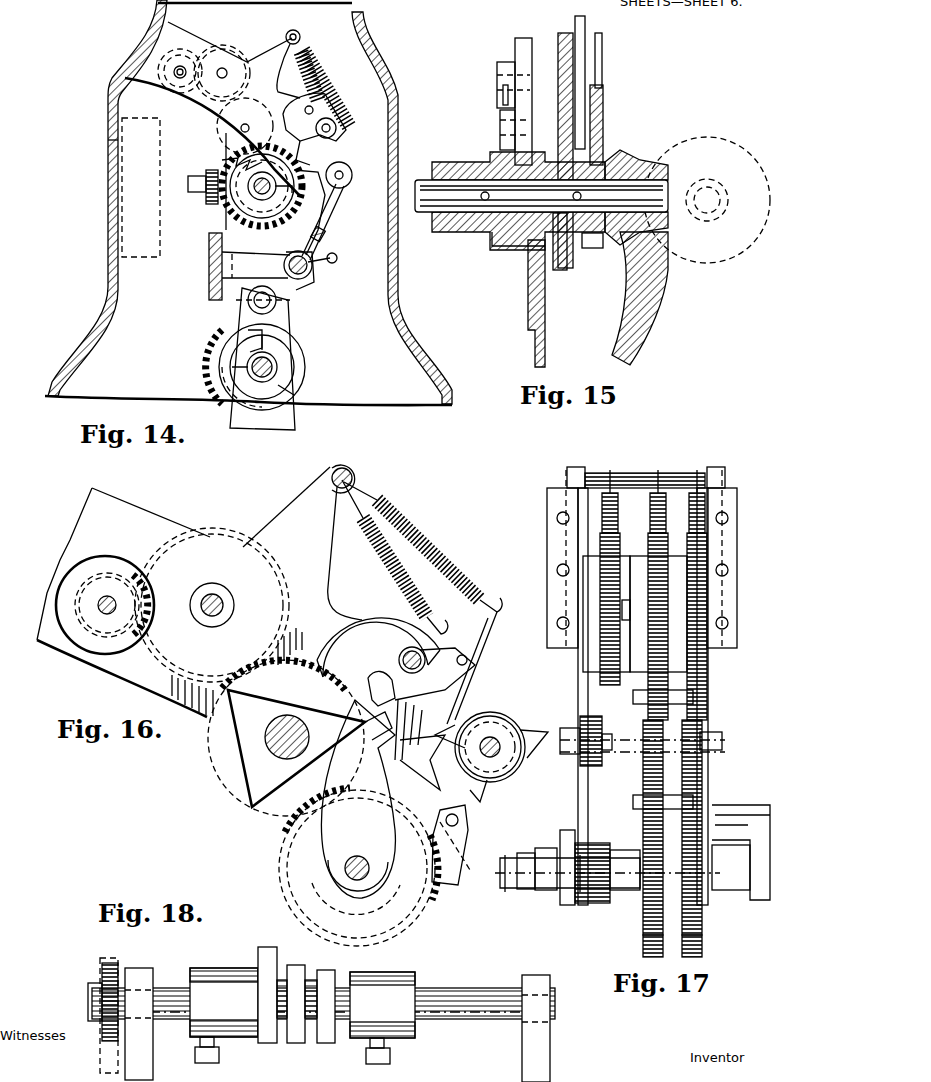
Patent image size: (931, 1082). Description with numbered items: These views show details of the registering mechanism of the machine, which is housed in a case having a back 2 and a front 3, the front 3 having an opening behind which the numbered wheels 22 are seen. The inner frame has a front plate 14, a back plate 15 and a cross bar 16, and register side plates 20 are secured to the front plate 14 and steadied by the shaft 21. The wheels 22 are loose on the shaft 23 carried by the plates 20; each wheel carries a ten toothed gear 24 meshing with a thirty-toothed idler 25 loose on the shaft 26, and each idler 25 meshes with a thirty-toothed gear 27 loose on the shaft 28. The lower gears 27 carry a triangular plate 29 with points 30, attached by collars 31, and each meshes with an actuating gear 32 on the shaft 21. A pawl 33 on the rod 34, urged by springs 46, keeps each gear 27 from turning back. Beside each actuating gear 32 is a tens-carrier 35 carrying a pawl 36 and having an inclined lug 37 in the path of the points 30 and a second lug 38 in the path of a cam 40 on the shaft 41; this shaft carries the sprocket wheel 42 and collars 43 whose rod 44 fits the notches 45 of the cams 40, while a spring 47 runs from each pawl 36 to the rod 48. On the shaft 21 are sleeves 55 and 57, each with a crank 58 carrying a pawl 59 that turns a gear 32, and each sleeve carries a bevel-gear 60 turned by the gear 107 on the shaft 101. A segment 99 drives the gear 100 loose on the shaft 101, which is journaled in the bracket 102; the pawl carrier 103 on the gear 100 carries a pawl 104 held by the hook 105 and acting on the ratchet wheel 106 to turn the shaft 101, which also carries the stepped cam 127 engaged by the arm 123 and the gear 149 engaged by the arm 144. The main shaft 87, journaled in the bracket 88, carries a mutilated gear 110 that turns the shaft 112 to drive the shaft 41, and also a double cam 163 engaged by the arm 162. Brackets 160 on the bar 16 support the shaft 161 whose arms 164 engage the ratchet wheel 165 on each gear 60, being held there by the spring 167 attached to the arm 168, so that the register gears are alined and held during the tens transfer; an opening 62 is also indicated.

In FIG. 14, the back 2 is at (392, 120).
In FIG. 14, the front 3 is at (110, 150).
In FIG. 14, the front plate 14 is at (125, 78).
In FIG. 14, the back plate 15 is at (378, 60).
In FIG. 14, the cross bar 16 is at (208, 268).
In FIG. 14, the side plates 20 is at (230, 47).
In FIG. 16, the side plates 20 is at (183, 592).
In FIG. 17, the side plates 20 is at (548, 549).
In FIG. 18, the side plates 20 is at (337, 1025).
In FIG. 14, the shaft 21 is at (217, 222).
In FIG. 16, the shaft 21 is at (360, 856).
In FIG. 17, the shaft 21 is at (502, 882).
In FIG. 14, the wheels 22 is at (172, 93).
In FIG. 16, the wheels 22 is at (96, 562).
In FIG. 17, the wheels 22 is at (640, 560).
In FIG. 14, the shaft 23 is at (181, 66).
In FIG. 16, the shaft 23 is at (103, 612).
In FIG. 16, the ten toothed gear 24 is at (130, 590).
In FIG. 17, the ten toothed gear 24 is at (580, 590).
In FIG. 16, the idler 25 is at (218, 622).
In FIG. 17, the idler 25 is at (705, 540).
In FIG. 14, the shaft 26 is at (223, 68).
In FIG. 16, the shaft 26 is at (224, 604).
In FIG. 16, the gear 27 is at (286, 738).
In FIG. 17, the gear 27 is at (702, 768).
In FIG. 14, the shaft 28 is at (245, 126).
In FIG. 16, the shaft 28 is at (272, 744).
In FIG. 17, the shaft 28 is at (718, 742).
In FIG. 16, the triangular plate 29 is at (296, 748).
In FIG. 17, the triangular plate 29 is at (636, 780).
In FIG. 16, the points 30 is at (358, 722).
In FIG. 17, the points 30 is at (635, 702).
In FIG. 16, the collars 31 is at (282, 758).
In FIG. 16, the actuating gear 32 is at (358, 867).
In FIG. 17, the actuating gear 32 is at (685, 957).
In FIG. 16, the pawl 33 is at (378, 647).
In FIG. 16, the rod 34 is at (435, 666).
In FIG. 16, the tens-carrier 35 is at (371, 799).
In FIG. 14, the pawl 36 is at (321, 129).
In FIG. 16, the pawl 36 is at (362, 672).
In FIG. 16, the inclined lug 37 is at (378, 726).
In FIG. 16, the second lug 38 is at (420, 760).
In FIG. 16, the cam 40 is at (500, 728).
In FIG. 18, the cam 40 is at (268, 1043).
In FIG. 14, the shaft 41 is at (344, 188).
In FIG. 16, the shaft 41 is at (488, 740).
In FIG. 18, the shaft 41 is at (170, 998).
In FIG. 18, the sprocket wheel 42 is at (108, 963).
In FIG. 18, the collars 43 is at (302, 1016).
In FIG. 18, the rod 44 is at (312, 1045).
In FIG. 16, the notches 45 is at (522, 768).
In FIG. 14, the springs 46 is at (297, 72).
In FIG. 16, the springs 46 is at (395, 572).
In FIG. 17, the springs 46 is at (653, 501).
In FIG. 14, the spring 47 is at (334, 82).
In FIG. 16, the spring 47 is at (444, 562).
In FIG. 14, the rod 48 is at (300, 37).
In FIG. 16, the rod 48 is at (358, 474).
In FIG. 17, the sleeve 55 is at (524, 884).
In FIG. 17, the sleeve 57 is at (548, 886).
In FIG. 16, the crank 58 is at (426, 822).
In FIG. 17, the crank 58 is at (744, 818).
In FIG. 16, the pawl 59 is at (452, 846).
In FIG. 14, the bevel-gear 60 is at (262, 226).
In FIG. 15, the bevel-gear 60 is at (702, 118).
In FIG. 14, the opening 62 is at (120, 200).
In FIG. 14, the main shaft 87 is at (274, 375).
In FIG. 14, the bracket 88 is at (251, 407).
In FIG. 15, the segment 99 is at (530, 270).
In FIG. 15, the gear 100 is at (518, 197).
In FIG. 15, the shaft 101 is at (422, 212).
In FIG. 15, the bracket 102 is at (634, 288).
In FIG. 15, the pawl carrier 103 is at (528, 56).
In FIG. 15, the pawl 104 is at (505, 140).
In FIG. 15, the hook 105 is at (497, 80).
In FIG. 15, the ratchet wheel 106 is at (496, 250).
In FIG. 14, the gear 107 is at (255, 190).
In FIG. 15, the gear 107 is at (628, 154).
In FIG. 14, the mutilated gear 110 is at (214, 362).
In FIG. 14, the shaft 112 is at (258, 302).
In FIG. 15, the arms 123 is at (582, 70).
In FIG. 15, the cam 127 is at (552, 150).
In FIG. 15, the arms 144 is at (603, 108).
In FIG. 15, the gears 149 is at (592, 248).
In FIG. 14, the brackets 160 is at (256, 265).
In FIG. 14, the shaft 161 is at (305, 272).
In FIG. 14, the arm 162 is at (282, 322).
In FIG. 14, the double cam 163 is at (275, 364).
In FIG. 14, the arms 164 is at (318, 222).
In FIG. 14, the ratchet wheel 165 is at (224, 158).
In FIG. 14, the spring 167 is at (324, 238).
In FIG. 14, the arm 168 is at (338, 260).